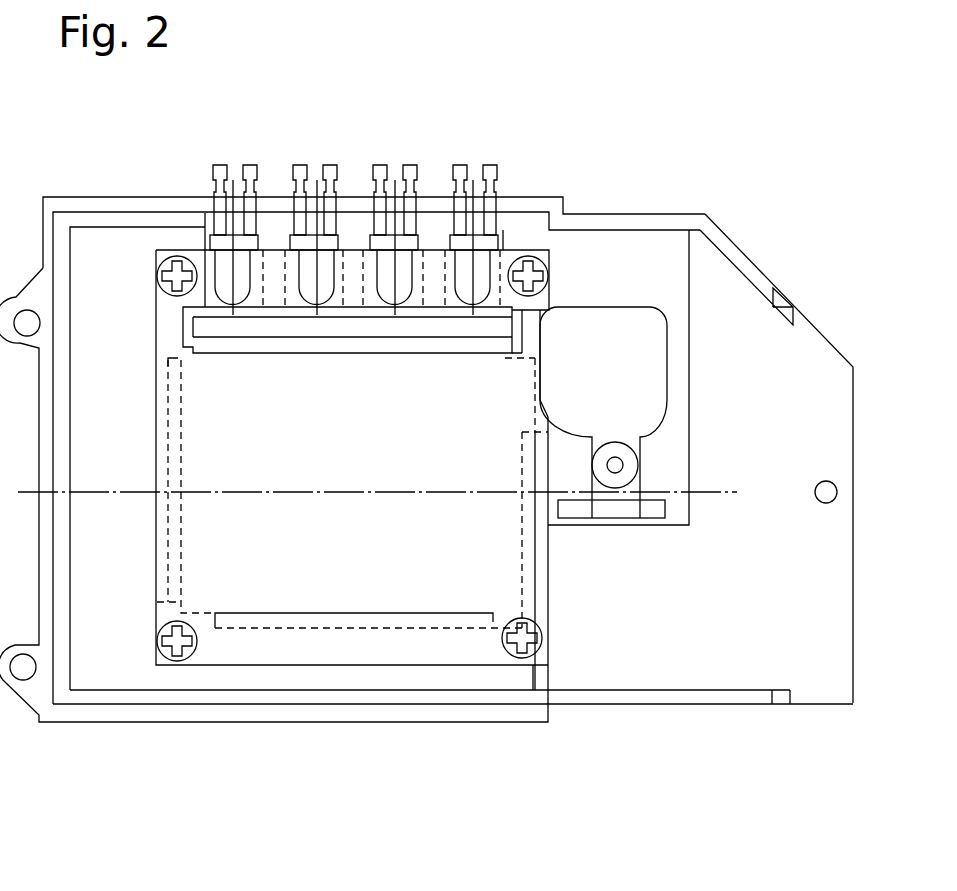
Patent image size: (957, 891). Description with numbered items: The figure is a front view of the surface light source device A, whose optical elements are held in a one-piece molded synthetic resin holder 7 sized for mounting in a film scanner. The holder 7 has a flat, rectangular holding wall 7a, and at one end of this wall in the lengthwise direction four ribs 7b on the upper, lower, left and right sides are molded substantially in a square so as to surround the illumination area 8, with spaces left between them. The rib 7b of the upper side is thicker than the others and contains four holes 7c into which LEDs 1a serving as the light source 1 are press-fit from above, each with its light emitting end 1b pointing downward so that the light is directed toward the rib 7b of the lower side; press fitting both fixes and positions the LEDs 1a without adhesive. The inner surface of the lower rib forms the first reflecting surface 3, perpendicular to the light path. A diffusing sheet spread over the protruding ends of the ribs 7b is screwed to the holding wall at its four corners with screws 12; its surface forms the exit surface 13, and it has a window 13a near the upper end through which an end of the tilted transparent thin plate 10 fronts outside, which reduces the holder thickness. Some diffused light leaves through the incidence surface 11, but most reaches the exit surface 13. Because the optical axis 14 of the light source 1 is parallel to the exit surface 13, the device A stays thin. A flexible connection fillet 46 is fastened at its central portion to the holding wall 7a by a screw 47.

The light source 1 is at (231, 233).
The LED 1a is at (462, 270).
The light emitting end 1b is at (487, 290).
The first reflecting surface 3 is at (298, 613).
The holder 7 is at (640, 703).
The holding wall 7a is at (818, 668).
The rib 7b is at (502, 250).
The hole 7c is at (490, 275).
The illumination area 8 is at (182, 450).
The transparent thin plate 10 is at (542, 329).
The incidence surface 11 is at (183, 322).
The screw 12 is at (160, 267).
The exit surface 13 is at (156, 480).
The window 13a is at (206, 351).
The optical axis 14 is at (474, 265).
The connection fillet 46 is at (642, 433).
The screw 47 is at (618, 468).
The surface light source device A is at (133, 722).